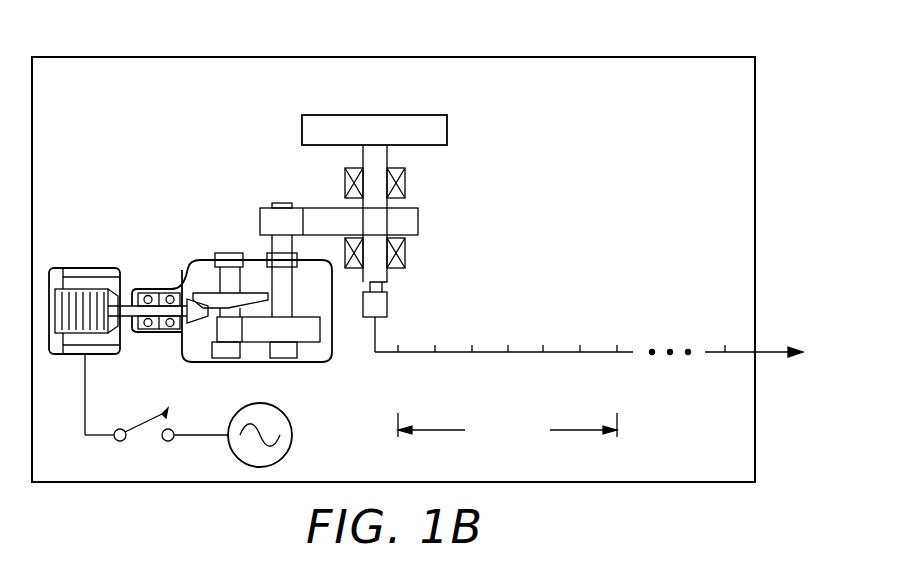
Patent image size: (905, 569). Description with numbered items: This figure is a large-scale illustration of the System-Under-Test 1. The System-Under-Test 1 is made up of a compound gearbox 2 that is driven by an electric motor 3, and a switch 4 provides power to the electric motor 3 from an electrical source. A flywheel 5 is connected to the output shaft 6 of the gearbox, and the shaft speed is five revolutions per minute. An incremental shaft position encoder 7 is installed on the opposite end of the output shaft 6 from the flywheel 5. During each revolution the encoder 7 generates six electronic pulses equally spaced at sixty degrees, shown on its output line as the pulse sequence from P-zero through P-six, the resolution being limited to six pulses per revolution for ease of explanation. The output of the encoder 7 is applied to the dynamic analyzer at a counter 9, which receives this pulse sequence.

The System-Under-Test 1 is at (151, 57).
The compound gearbox 2 is at (186, 261).
The electric motor 3 is at (80, 268).
The switch 4 is at (138, 424).
The flywheel 5 is at (442, 131).
The output shaft 6 is at (384, 163).
The incremental shaft position encoder 7 is at (380, 308).
The counter 9 is at (811, 360).